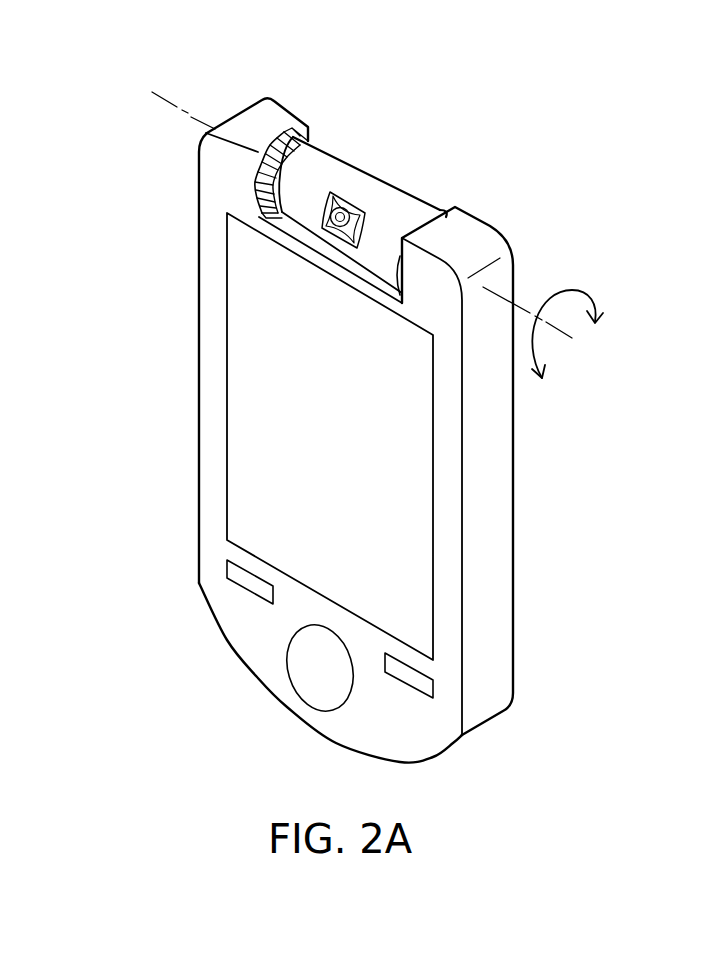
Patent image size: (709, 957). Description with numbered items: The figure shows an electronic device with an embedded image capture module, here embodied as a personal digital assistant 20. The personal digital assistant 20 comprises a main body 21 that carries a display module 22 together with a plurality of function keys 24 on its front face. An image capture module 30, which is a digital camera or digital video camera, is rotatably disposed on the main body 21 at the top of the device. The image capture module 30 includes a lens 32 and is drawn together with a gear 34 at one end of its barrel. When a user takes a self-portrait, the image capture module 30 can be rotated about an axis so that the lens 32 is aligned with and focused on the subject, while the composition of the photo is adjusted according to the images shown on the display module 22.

The personal digital assistant 20 is at (146, 75).
The main body 21 is at (222, 297).
The display module 22 is at (253, 391).
The function keys 24 is at (240, 577).
The image capture module 30 is at (328, 211).
The lens 32 is at (338, 216).
The gear 34 is at (265, 186).